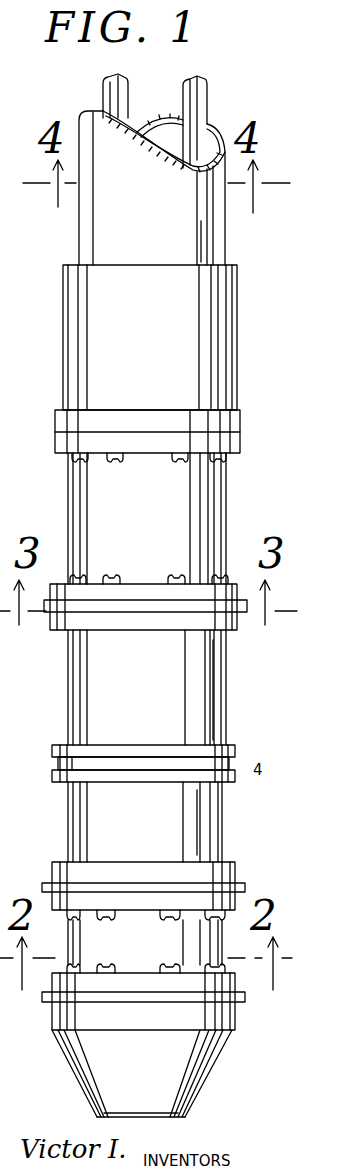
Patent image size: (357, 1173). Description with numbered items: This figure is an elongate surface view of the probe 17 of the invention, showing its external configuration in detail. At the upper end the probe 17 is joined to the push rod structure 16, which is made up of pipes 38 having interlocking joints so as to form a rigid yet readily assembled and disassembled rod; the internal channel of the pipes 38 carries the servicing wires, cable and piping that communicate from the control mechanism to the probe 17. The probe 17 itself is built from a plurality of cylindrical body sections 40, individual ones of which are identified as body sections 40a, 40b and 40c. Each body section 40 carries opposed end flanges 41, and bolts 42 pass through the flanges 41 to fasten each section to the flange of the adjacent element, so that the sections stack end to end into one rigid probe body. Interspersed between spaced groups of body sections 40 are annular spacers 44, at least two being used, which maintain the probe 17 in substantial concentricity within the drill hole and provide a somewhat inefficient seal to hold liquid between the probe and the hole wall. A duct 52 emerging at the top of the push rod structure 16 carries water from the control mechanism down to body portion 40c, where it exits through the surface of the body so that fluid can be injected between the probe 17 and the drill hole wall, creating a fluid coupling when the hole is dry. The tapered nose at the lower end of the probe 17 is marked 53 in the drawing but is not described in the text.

The push rod structure 16 is at (74, 234).
The probe 17 is at (58, 319).
The pipes 38 is at (201, 221).
The cylindrical body sections 40 is at (207, 366).
The cylindrical body section 40a is at (213, 688).
The cylindrical body section 40b is at (197, 820).
The probe body portion 40c is at (72, 765).
The end flanges 41 is at (62, 440).
The bolts 42 is at (212, 459).
The annular spacers 44 is at (62, 888).
The duct 52 is at (193, 103).
The conical nose 53 is at (230, 1085).